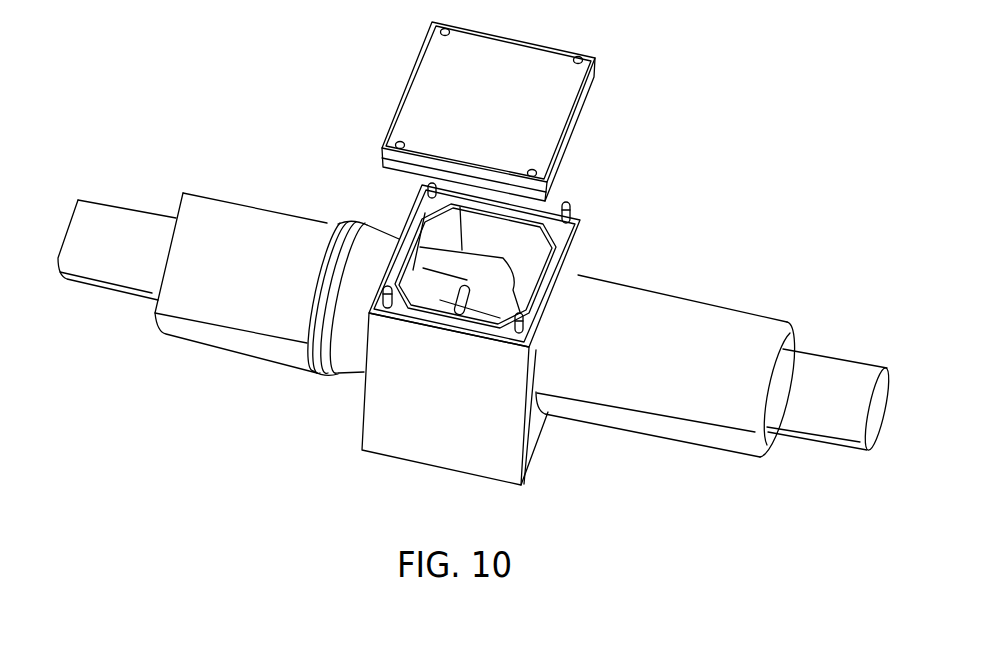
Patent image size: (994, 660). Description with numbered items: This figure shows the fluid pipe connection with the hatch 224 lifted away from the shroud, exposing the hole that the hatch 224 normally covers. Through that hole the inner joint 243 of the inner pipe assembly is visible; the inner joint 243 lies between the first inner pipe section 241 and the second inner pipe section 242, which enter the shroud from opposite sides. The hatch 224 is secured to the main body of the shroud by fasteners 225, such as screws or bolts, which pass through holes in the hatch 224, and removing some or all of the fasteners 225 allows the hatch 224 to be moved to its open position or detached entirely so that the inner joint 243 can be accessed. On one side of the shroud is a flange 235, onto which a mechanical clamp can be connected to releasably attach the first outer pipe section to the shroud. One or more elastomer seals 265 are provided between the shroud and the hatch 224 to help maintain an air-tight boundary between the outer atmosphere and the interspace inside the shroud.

The hatch 224 is at (432, 95).
The fasteners 225 is at (424, 187).
The flange 235 is at (333, 230).
The first inner pipe section 241 is at (122, 272).
The second inner pipe section 242 is at (825, 380).
The inner joint 243 is at (524, 261).
The elastomer seal 265 is at (425, 323).